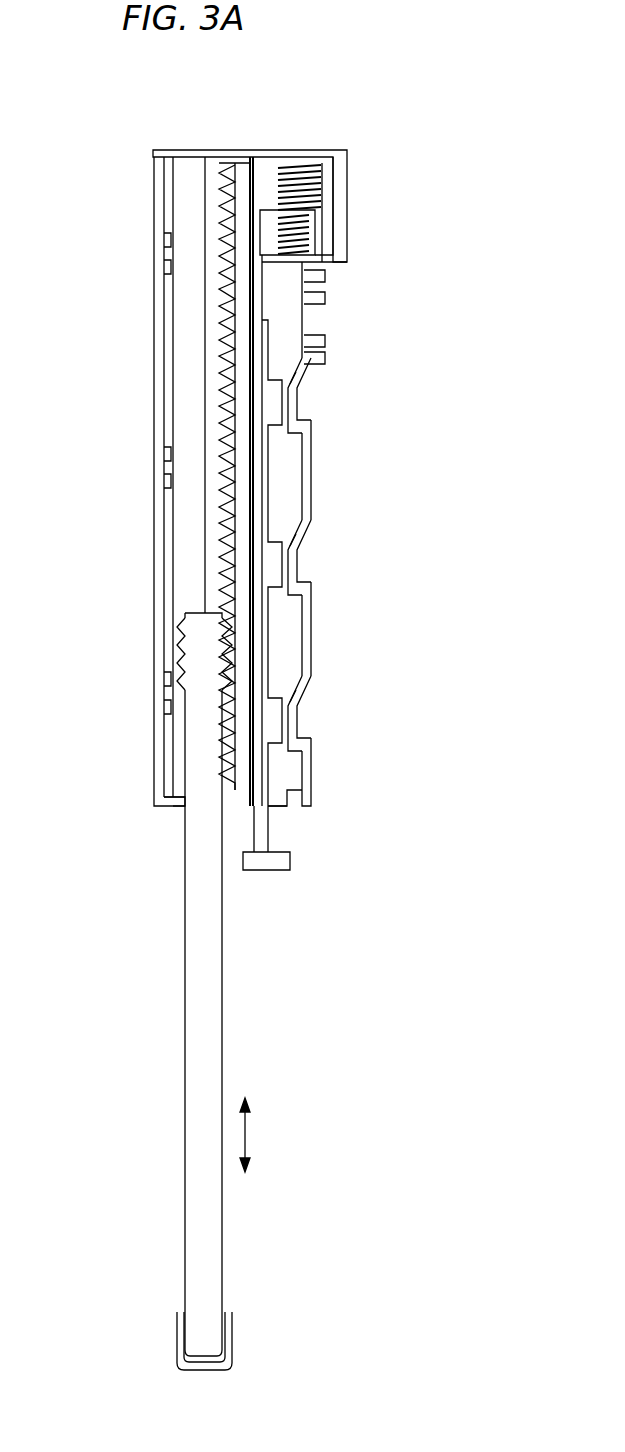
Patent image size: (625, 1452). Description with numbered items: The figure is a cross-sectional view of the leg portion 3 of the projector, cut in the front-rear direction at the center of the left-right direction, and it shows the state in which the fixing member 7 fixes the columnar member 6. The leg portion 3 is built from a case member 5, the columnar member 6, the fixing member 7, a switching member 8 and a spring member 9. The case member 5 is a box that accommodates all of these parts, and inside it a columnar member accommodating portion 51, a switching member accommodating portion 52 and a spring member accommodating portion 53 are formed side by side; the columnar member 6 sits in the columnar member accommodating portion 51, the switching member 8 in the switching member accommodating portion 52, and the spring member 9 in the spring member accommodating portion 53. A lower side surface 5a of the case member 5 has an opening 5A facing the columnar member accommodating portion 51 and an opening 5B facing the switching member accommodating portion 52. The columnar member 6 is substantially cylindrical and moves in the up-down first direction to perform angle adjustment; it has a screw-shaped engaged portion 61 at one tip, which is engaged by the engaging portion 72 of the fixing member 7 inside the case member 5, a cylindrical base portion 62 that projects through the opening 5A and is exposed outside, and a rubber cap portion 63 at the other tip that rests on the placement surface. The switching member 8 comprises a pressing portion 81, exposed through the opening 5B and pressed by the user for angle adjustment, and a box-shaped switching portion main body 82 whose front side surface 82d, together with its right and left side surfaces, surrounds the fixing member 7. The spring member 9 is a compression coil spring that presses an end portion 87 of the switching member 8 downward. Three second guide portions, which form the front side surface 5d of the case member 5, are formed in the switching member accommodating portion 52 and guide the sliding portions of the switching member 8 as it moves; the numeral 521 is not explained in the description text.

The leg portion 3 is at (388, 131).
The case member 5 is at (193, 150).
The lower side surface 5a is at (174, 801).
The opening 5A is at (184, 810).
The opening 5B is at (278, 808).
The front side surface 5d is at (313, 612).
The columnar member 6 is at (181, 1011).
The fixing member 7 is at (238, 165).
The switching member 8 is at (263, 300).
The spring member 9 is at (322, 188).
The columnar member accommodating portion 51 is at (186, 365).
The switching member accommodating portion 52 is at (288, 450).
The spring member accommodating portion 53 is at (318, 232).
The engaged portion 61 is at (182, 640).
The base portion 62 is at (185, 1210).
The cap portion 63 is at (178, 1345).
The engaging portion 72 is at (243, 570).
The pressing portion 81 is at (266, 871).
The switching portion main body 82 is at (272, 767).
The front side surface 82d is at (264, 310).
The end portion 87 is at (270, 268).
The rack teeth 521 is at (218, 252).